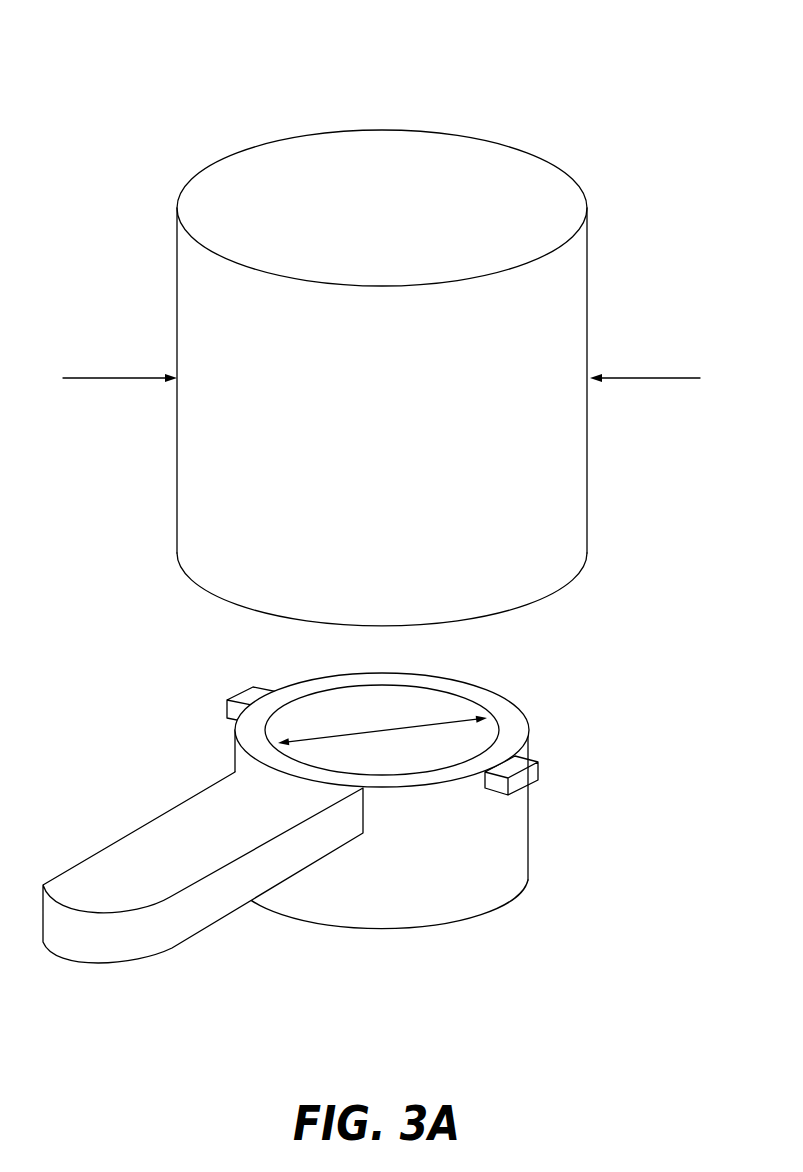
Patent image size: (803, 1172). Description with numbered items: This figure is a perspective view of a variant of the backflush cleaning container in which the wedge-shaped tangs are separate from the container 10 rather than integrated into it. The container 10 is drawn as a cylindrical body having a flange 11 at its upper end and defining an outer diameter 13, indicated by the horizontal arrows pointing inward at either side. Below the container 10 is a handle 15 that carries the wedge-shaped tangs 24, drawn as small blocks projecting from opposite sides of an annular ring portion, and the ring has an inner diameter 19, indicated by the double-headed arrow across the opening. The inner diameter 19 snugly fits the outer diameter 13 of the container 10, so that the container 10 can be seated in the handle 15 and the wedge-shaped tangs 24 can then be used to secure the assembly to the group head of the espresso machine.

The container 10 is at (614, 98).
The flange 11 is at (177, 210).
The outer diameter 13 is at (647, 378).
The handle 15 is at (344, 796).
The inner diameter 19 is at (433, 722).
The wedge-shaped tangs 24 is at (247, 690).